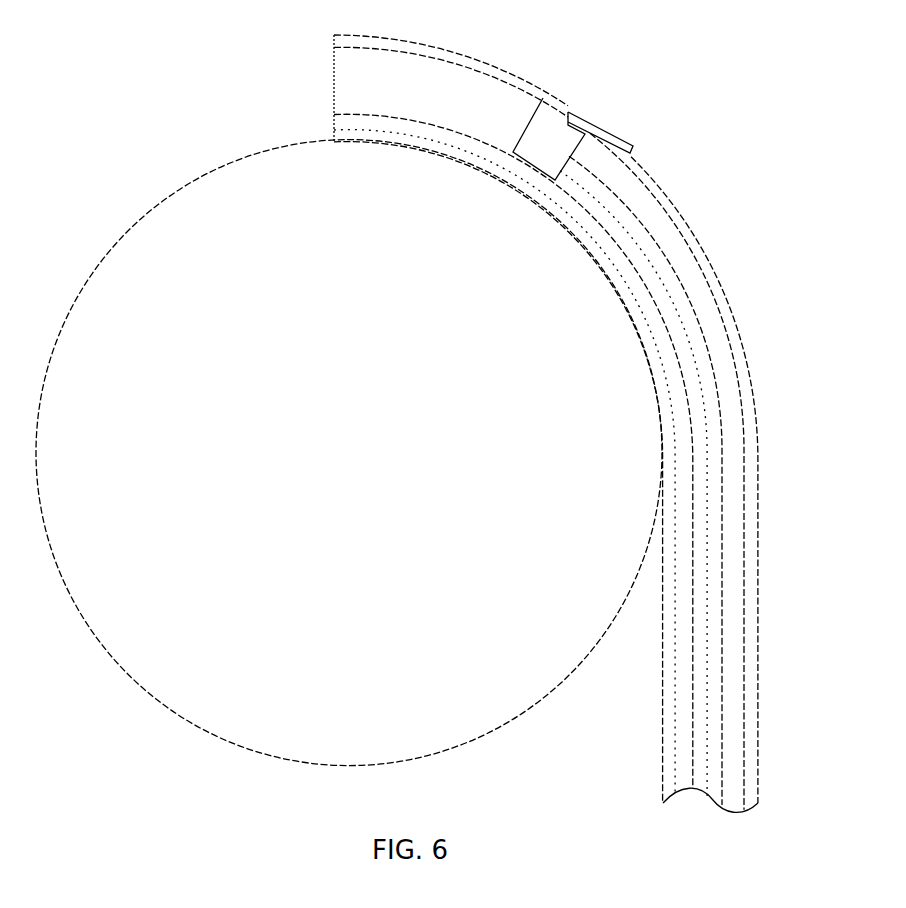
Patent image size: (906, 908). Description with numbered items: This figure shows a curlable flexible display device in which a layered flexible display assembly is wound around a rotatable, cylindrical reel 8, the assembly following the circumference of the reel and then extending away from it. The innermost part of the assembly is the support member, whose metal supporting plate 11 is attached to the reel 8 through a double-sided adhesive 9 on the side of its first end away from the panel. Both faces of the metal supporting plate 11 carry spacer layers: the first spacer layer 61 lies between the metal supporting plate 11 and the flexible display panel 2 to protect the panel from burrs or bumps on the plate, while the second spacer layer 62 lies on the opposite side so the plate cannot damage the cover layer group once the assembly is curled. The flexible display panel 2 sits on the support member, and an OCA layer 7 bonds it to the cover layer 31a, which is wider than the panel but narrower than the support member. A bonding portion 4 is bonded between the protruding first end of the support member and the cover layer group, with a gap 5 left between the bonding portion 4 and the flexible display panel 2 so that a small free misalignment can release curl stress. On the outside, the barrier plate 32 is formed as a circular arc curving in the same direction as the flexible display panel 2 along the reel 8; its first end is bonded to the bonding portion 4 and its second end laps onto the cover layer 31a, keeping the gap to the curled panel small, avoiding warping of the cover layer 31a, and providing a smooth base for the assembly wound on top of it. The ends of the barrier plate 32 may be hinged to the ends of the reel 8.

The flexible display panel 2 is at (537, 423).
The bonding portion 4 is at (490, 100).
The gap 5 is at (547, 142).
The OCA layer 7 is at (695, 283).
The reel 8 is at (259, 185).
The double-sided adhesive 9 is at (372, 138).
The metal supporting plate 11 is at (423, 137).
The cover layer 31a is at (673, 220).
The barrier plate 32 is at (545, 92).
The first spacer layer 61 is at (695, 418).
The second spacer layer 62 is at (668, 688).